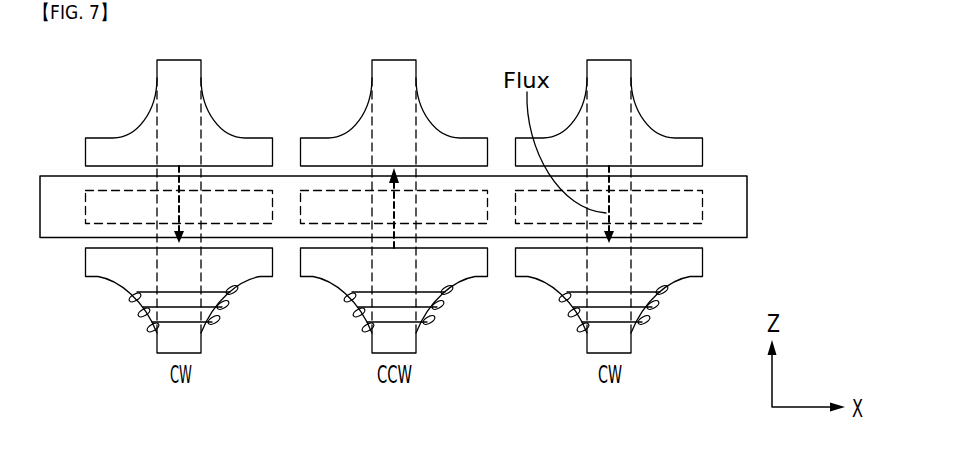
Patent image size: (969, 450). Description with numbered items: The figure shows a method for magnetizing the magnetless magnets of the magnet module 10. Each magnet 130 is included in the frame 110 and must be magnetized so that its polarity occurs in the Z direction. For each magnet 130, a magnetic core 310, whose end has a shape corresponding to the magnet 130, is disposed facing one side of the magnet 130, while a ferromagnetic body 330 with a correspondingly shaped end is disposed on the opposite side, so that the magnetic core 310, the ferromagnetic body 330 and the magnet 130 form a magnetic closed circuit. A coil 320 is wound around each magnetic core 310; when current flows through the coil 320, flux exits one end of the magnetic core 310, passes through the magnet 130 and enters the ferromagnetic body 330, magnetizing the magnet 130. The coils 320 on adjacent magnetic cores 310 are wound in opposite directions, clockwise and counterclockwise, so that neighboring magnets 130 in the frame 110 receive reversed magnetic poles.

The magnet module 10 is at (449, 207).
The frame 110 is at (737, 193).
The magnet 130 is at (693, 212).
The magnetic core 310 is at (103, 270).
The coil 320 is at (210, 325).
The ferromagnetic body 330 is at (102, 147).